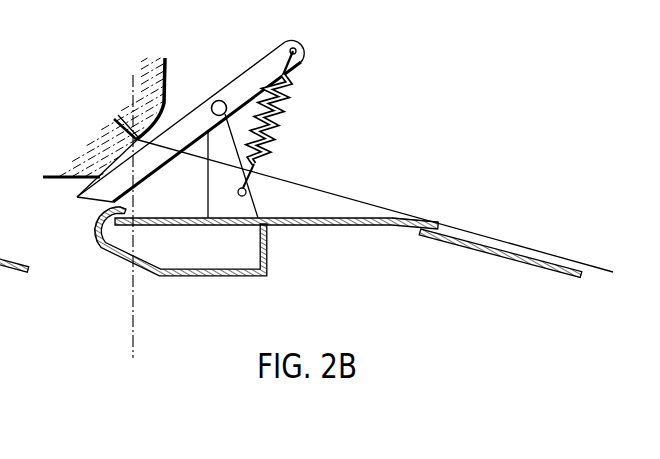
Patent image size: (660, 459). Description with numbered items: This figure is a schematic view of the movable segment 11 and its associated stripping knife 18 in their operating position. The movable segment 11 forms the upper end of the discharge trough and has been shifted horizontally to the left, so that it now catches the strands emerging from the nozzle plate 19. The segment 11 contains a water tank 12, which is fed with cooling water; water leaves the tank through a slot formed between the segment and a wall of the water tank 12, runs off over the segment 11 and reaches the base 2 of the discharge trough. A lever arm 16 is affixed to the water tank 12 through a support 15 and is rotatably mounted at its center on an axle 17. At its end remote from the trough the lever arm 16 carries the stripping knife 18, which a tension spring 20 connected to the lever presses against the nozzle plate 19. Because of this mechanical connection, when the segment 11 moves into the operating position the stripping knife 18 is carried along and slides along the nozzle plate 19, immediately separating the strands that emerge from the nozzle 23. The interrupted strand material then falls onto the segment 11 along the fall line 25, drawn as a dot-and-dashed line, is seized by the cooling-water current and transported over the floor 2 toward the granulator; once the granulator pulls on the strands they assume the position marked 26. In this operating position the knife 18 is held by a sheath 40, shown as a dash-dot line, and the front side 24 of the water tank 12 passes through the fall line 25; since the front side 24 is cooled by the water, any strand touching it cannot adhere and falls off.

The base 2 is at (487, 241).
The movable segment 11 is at (333, 218).
The water tank 12 is at (236, 258).
The support 15 is at (246, 208).
The lever arm 16 is at (261, 67).
The axle 17 is at (220, 101).
The stripping knife 18 is at (79, 205).
The nozzle plate 19 is at (158, 112).
The tension spring 20 is at (287, 97).
The nozzle 23 is at (117, 117).
The front side 24 is at (98, 246).
The fall line 25 is at (134, 308).
The strand position 26 is at (378, 201).
The sheath 40 is at (62, 211).